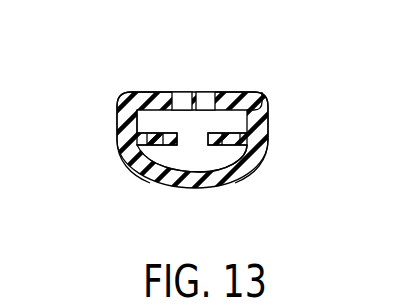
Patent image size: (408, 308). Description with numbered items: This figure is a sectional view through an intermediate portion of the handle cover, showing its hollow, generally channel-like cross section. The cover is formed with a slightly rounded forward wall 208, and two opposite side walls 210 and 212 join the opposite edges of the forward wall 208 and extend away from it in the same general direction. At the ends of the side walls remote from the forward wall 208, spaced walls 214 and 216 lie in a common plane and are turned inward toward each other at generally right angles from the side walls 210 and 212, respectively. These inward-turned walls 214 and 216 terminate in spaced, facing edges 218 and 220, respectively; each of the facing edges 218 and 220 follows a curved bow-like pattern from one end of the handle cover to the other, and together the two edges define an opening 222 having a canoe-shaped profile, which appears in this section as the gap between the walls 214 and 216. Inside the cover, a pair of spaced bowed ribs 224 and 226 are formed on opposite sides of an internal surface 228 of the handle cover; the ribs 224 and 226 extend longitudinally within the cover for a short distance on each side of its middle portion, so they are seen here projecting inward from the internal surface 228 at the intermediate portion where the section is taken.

The forward wall 208 is at (205, 190).
The side wall 210 is at (113, 137).
The side wall 212 is at (268, 125).
The wall 214 is at (137, 91).
The wall 216 is at (234, 90).
The facing edge 218 is at (182, 95).
The facing edge 220 is at (205, 95).
The opening 222 is at (202, 149).
The bowed rib 224 is at (145, 127).
The bowed rib 226 is at (260, 104).
The internal surface 228 is at (148, 158).